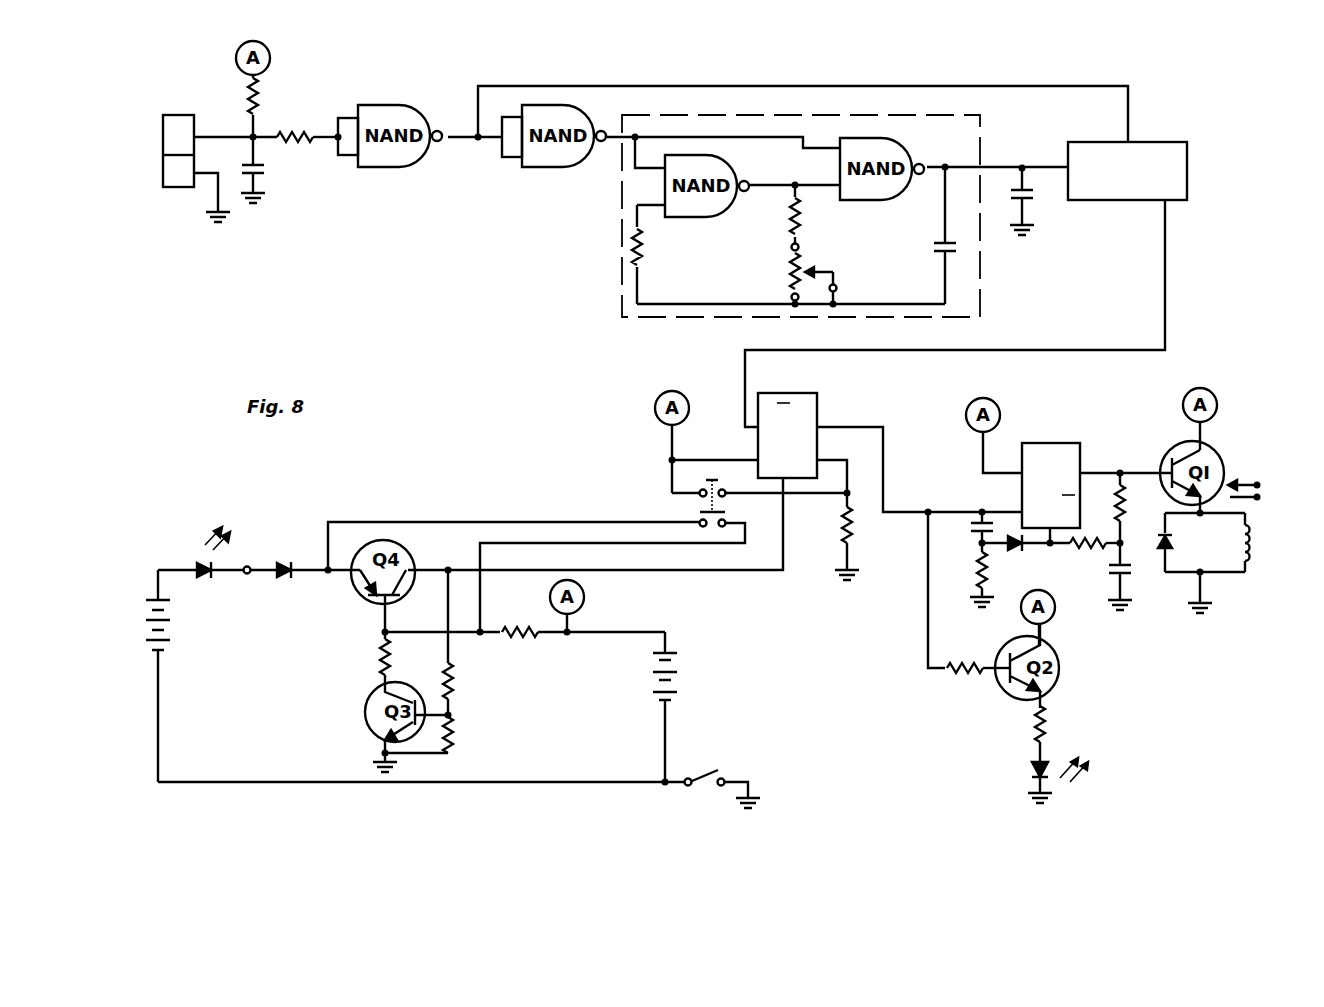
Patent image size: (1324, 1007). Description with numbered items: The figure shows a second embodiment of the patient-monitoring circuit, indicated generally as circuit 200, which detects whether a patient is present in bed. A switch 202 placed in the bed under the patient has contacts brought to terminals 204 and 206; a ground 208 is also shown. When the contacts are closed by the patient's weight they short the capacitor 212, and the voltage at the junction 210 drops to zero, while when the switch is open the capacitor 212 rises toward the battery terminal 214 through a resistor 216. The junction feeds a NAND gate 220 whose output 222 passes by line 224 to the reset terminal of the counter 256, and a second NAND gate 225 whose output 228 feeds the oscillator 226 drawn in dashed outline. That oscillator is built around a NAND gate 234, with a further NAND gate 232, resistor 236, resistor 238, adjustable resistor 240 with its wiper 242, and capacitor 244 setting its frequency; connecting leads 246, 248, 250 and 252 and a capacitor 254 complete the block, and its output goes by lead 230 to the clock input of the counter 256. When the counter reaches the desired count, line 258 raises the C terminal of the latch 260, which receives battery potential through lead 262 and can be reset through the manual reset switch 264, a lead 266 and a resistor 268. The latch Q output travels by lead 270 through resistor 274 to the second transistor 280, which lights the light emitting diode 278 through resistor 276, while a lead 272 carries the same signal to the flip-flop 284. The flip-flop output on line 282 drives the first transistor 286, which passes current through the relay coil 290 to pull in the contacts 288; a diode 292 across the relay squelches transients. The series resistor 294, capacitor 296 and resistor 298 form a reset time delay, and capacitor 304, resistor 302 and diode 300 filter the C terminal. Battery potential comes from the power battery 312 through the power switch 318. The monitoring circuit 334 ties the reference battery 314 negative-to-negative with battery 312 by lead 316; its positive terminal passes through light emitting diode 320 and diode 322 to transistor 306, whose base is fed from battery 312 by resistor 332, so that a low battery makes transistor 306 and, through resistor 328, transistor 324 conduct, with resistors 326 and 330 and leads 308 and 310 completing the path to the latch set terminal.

The second embodiment circuit 200 is at (462, 325).
The switch 202 is at (177, 114).
The terminal 204 is at (196, 127).
The terminal 206 is at (196, 164).
The ground 208 is at (212, 202).
The junction 210 is at (258, 140).
The capacitor 212 is at (262, 176).
The battery terminal 214 is at (271, 60).
The resistor 216 is at (262, 97).
The NAND gate 220 is at (378, 104).
The output junction 222 is at (478, 142).
The line 224 is at (698, 65).
The second NAND gate 225 is at (545, 104).
The oscillator 226 is at (621, 292).
The output of second NAND gate 228 is at (606, 142).
The lead 230 is at (1000, 165).
The NAND gate 232 is at (735, 168).
The NAND gate 234 is at (915, 148).
The resistor 236 is at (643, 258).
The resistor 238 is at (790, 235).
The resistor 240 is at (790, 282).
The wiper 242 is at (826, 270).
The capacitor 244 is at (940, 246).
The conductor 246 is at (755, 134).
The conductor 248 is at (778, 187).
The conductor 250 is at (735, 302).
The conductor 252 is at (860, 302).
The capacitor 254 is at (1030, 198).
The counter 256 is at (1100, 140).
The line 258 is at (1164, 286).
The latch 260 is at (818, 400).
The lead 262 is at (690, 459).
The manual reset switch 264 is at (700, 490).
The conductor 266 is at (840, 498).
The resistor 268 is at (852, 538).
The lead 270 is at (883, 458).
The conductor 272 is at (927, 656).
The resistor 274 is at (962, 674).
The resistor 276 is at (1048, 723).
The light emitting diode 278 is at (1032, 770).
The transistor Q2 280 is at (1058, 684).
The line 282 is at (1120, 468).
The flip-flop 284 is at (1080, 445).
The transistor Q1 286 is at (1216, 458).
The relay contacts 288 is at (1262, 490).
The relay coil 290 is at (1248, 556).
The diode 292 is at (1170, 548).
The series resistor 294 is at (1168, 520).
The capacitor 296 is at (1125, 578).
The resistor 298 is at (1085, 553).
The diode 300 is at (1016, 552).
The resistor 302 is at (982, 580).
The capacitor 304 is at (985, 521).
The transistor 306 is at (412, 560).
The conductor 308 is at (474, 520).
The conductor 310 is at (555, 542).
The power supply battery B2 312 is at (655, 675).
The reference battery B1 314 is at (175, 618).
The lead 316 is at (160, 702).
The power switch 318 is at (705, 772).
The light emitting diode 320 is at (188, 566).
The standard diode 322 is at (281, 562).
The transistor 324 is at (365, 712).
The resistor 326 is at (380, 656).
The resistor 328 is at (452, 686).
The resistor 330 is at (452, 738).
The resistor 332 is at (540, 602).
The battery monitoring circuit 334 is at (355, 516).